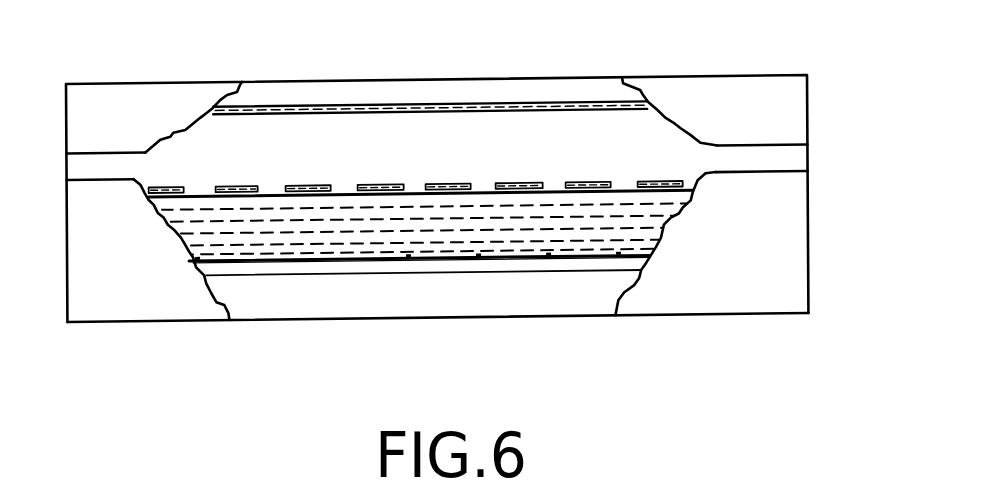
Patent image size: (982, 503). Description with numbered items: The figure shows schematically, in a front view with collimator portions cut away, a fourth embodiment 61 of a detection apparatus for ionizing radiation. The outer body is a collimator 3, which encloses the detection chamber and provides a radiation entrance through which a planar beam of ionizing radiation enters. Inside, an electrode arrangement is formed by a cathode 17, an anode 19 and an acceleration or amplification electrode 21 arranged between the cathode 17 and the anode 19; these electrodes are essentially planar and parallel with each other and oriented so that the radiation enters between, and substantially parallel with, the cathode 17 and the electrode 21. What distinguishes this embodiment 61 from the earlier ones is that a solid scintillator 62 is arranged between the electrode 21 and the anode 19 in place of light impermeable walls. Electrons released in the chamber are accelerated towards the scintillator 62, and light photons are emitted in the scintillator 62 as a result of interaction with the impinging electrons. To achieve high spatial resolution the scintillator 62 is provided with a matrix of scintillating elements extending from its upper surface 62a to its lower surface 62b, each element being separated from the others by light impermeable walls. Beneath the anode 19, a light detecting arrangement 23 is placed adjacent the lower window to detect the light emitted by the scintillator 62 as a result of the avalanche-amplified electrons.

The collimator 3 is at (790, 241).
The cathode 17 is at (402, 116).
The anode 19 is at (483, 263).
The acceleration or amplification electrode 21 is at (527, 193).
The light detecting arrangement 23 is at (372, 306).
The embodiment of the detection apparatus 61 is at (705, 60).
The solid scintillator 62 is at (648, 225).
The upper surface of the scintillator 62a is at (621, 195).
The lower surface of the scintillator 62b is at (571, 260).